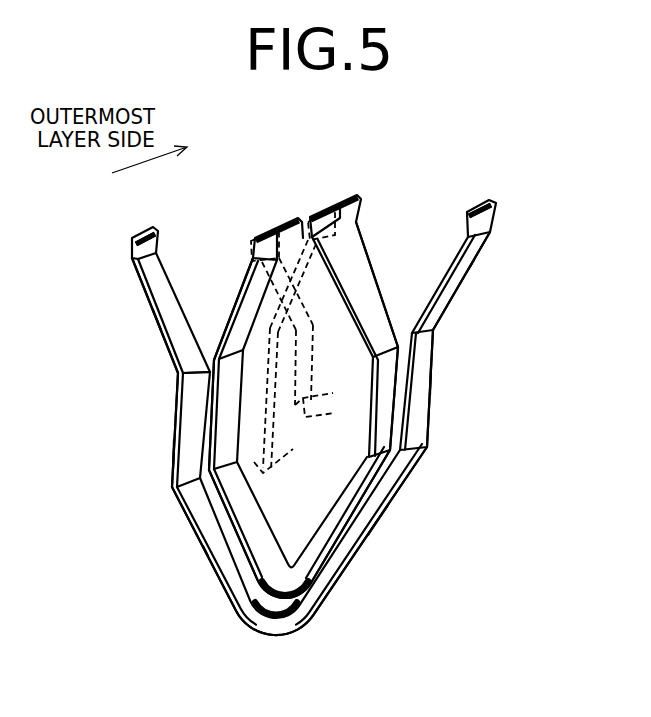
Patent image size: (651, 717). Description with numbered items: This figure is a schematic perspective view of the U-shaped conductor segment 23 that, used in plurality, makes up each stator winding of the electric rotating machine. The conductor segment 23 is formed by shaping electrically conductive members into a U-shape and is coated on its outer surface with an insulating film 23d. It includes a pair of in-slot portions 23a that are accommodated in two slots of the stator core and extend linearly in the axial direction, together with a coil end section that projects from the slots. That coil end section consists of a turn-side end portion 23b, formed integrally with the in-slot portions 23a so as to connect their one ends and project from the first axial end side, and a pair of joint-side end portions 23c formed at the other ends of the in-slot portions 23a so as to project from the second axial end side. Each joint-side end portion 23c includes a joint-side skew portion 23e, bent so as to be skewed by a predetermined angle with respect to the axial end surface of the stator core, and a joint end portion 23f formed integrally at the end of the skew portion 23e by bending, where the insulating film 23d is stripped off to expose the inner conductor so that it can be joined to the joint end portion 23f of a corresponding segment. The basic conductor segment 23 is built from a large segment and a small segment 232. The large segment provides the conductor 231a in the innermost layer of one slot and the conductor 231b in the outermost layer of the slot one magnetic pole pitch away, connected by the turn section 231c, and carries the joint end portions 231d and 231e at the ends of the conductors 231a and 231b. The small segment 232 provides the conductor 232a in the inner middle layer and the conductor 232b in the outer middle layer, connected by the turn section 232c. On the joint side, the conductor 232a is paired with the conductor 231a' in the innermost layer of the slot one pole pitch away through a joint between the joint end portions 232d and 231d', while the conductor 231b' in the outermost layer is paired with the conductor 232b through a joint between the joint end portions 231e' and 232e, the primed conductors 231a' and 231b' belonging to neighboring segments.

The conductor segment 23 is at (207, 609).
The in-slot portion 23a is at (212, 438).
The turn-side end portion 23b is at (391, 547).
The joint-side end portion 23c is at (234, 297).
The insulating film 23d is at (227, 544).
The joint-side skew portion 23e is at (212, 312).
The joint end portion 23f is at (467, 212).
The conductor in innermost layer 231a is at (138, 429).
The conductor in innermost layer 231a' is at (325, 390).
The conductor in outermost layer 231b is at (470, 390).
The conductor in outermost layer 231b' is at (289, 416).
The turn section 231c is at (273, 635).
The first tip portion of outer plate 231d is at (125, 300).
The joint end portion 231d' is at (241, 280).
The second tip portion of outer plate 231e is at (499, 264).
The joint end portion 231e' is at (349, 217).
The small segment 232 is at (388, 295).
The conductor in inner middle layer 232a is at (227, 417).
The conductor in outer middle layer 232b is at (387, 430).
The turn section 232c is at (290, 587).
The joint end portion 232d is at (293, 220).
The joint end portion 232e is at (330, 215).